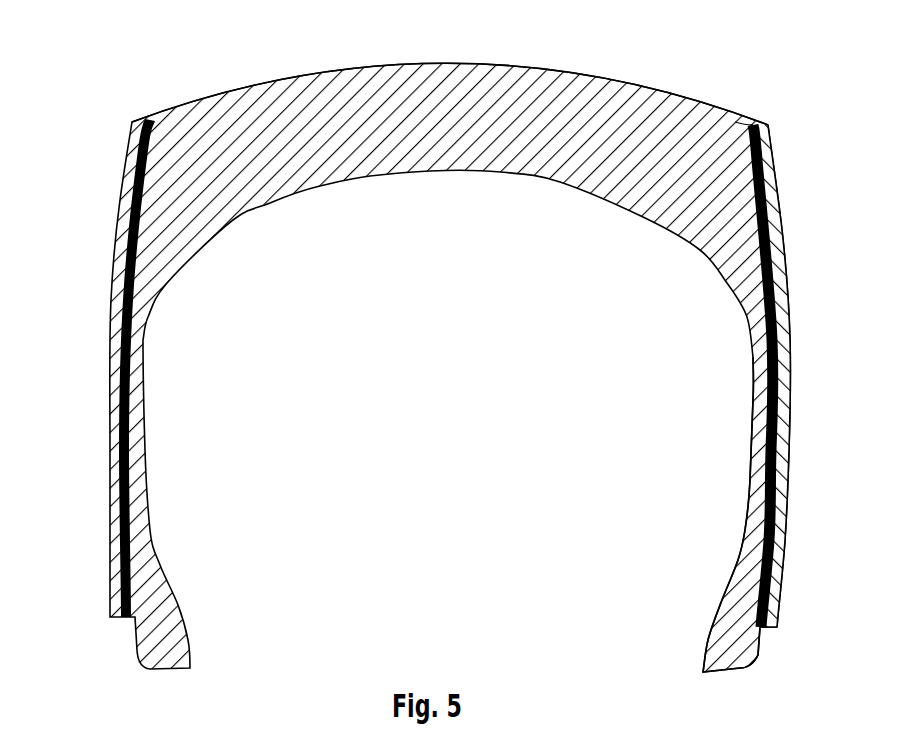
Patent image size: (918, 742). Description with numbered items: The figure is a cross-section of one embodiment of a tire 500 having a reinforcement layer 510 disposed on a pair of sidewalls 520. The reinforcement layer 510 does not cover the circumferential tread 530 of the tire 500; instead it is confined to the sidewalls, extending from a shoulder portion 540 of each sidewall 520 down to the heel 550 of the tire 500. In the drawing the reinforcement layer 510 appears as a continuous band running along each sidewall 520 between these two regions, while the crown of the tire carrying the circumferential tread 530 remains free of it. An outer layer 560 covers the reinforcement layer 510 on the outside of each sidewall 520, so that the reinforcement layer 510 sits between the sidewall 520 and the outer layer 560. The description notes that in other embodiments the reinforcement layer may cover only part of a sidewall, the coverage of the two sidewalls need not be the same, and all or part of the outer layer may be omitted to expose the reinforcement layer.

The tire 500 is at (126, 82).
The reinforcement layer 510 is at (775, 447).
The sidewall 520 is at (757, 403).
The circumferential tread 530 is at (490, 46).
The shoulder portion 540 is at (730, 120).
The heel 550 is at (755, 648).
The outer layer 560 is at (769, 192).